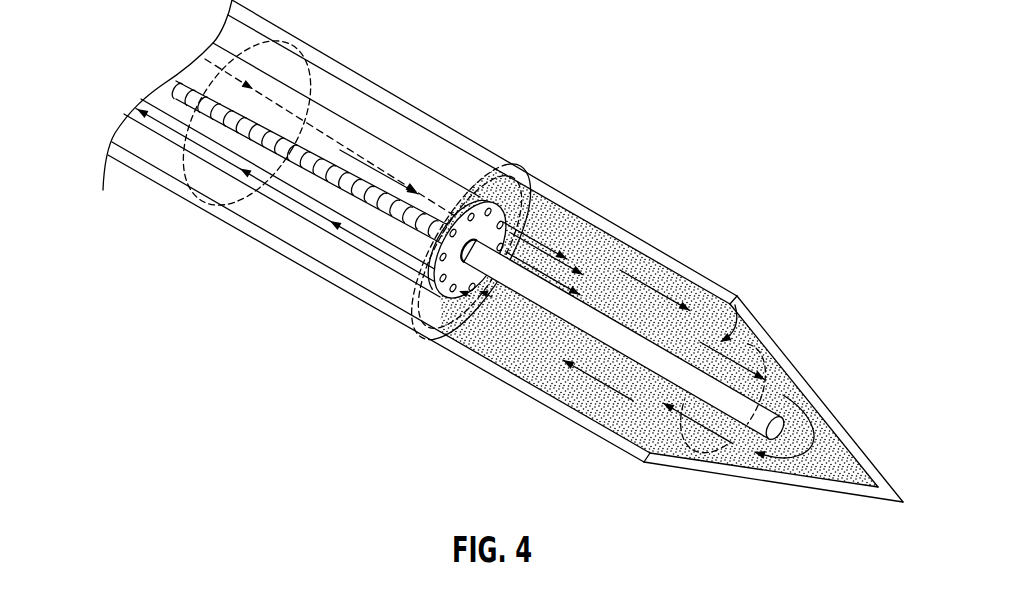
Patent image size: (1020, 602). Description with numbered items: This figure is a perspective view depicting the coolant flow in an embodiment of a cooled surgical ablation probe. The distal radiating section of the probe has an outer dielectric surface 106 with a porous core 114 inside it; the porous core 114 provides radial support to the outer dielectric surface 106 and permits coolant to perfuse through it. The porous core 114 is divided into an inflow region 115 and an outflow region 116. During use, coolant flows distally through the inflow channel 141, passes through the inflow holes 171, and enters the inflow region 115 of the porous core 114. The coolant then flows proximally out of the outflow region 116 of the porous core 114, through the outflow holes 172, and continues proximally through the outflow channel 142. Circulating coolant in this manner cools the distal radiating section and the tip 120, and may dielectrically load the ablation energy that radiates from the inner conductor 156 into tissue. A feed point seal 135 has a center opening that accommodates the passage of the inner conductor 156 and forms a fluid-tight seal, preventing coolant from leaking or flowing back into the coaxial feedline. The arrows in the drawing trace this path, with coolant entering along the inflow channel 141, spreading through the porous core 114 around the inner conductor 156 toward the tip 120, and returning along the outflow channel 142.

The outer dielectric surface 106 is at (643, 248).
The porous core 114 is at (732, 322).
The inflow region 115 is at (561, 221).
The outflow region 116 is at (547, 372).
The tip 120 is at (823, 402).
The feed point seal 135 is at (462, 300).
The inflow channel 141 is at (382, 100).
The outflow channel 142 is at (337, 203).
The inner conductor 156 is at (643, 350).
The inflow holes 171 is at (515, 181).
The outflow holes 172 is at (447, 303).